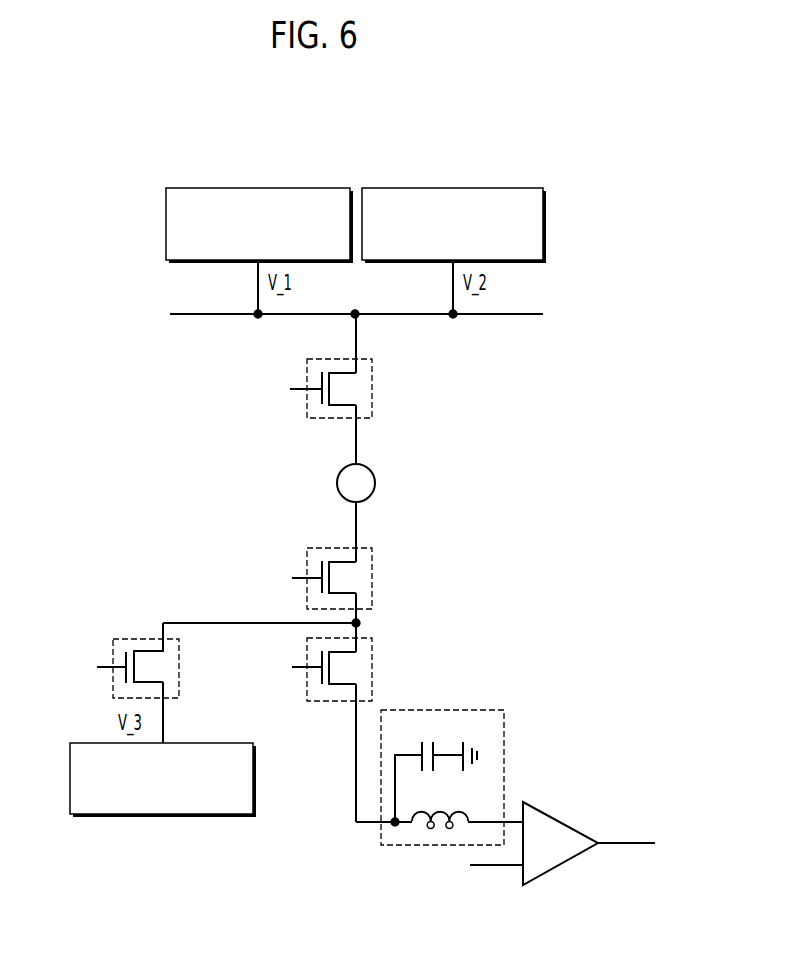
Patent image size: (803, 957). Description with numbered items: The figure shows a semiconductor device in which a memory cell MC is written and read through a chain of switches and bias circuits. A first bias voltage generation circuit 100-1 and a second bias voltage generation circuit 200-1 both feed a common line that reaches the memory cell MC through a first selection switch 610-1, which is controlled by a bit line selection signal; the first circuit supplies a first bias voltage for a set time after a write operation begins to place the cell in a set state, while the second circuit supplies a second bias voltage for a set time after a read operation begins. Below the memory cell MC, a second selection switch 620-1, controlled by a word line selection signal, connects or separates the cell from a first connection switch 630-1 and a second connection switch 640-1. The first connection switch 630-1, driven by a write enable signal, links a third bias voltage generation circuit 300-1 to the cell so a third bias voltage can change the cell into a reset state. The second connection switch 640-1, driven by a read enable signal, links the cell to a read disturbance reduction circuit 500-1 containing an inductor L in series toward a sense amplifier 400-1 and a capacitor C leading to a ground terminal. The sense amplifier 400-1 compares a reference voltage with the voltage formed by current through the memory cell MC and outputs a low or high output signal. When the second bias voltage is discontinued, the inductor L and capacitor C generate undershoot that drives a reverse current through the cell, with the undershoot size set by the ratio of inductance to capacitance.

The first bias voltage generation circuit 100-1 is at (285, 186).
The second bias voltage generation circuit 200-1 is at (480, 186).
The third bias voltage generation circuit 300-1 is at (187, 743).
The sense amplifier 400-1 is at (567, 817).
The read disturbance reduction circuit 500-1 is at (446, 762).
The first selection switch 610-1 is at (372, 390).
The second selection switch 620-1 is at (372, 578).
The first connection switch 630-1 is at (126, 639).
The second connection switch 640-1 is at (372, 667).
The memory cell MC is at (375, 483).
The capacitor C is at (428, 740).
The inductor L is at (447, 815).